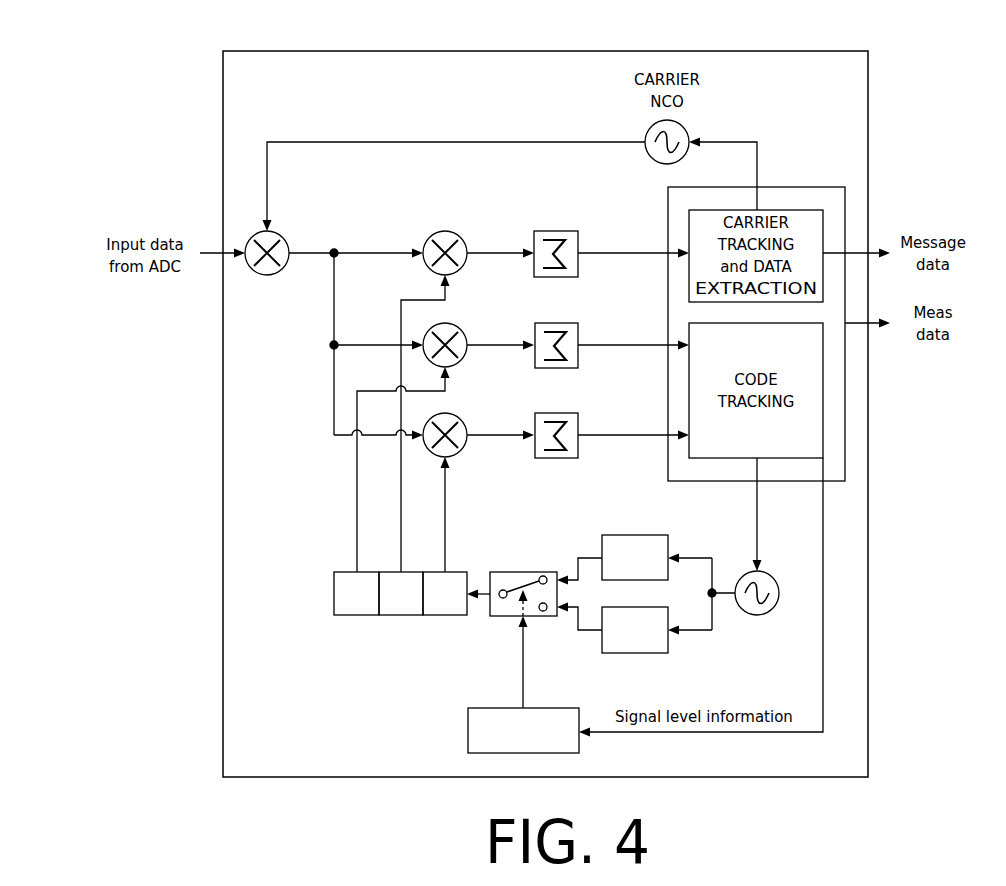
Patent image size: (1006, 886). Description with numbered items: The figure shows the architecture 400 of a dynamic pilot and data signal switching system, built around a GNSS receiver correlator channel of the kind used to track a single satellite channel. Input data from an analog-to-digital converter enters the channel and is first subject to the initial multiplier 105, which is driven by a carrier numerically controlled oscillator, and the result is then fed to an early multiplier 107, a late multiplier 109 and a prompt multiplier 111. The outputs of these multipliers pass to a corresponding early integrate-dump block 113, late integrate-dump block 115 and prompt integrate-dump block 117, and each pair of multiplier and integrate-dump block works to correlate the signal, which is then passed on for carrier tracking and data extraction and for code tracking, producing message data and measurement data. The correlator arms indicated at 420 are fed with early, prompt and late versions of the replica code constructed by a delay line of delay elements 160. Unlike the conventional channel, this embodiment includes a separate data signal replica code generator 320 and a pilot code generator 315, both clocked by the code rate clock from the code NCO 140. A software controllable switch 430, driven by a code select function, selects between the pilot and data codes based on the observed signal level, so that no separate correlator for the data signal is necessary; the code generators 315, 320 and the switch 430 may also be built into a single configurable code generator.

The architecture 400 is at (118, 148).
The initial multiplier 105 is at (258, 238).
The correlator 420 is at (482, 97).
The prompt multiplier 111 is at (451, 230).
The late multiplier 109 is at (433, 330).
The early multiplier 107 is at (437, 416).
The prompt integrate-dump block 117 is at (562, 231).
The late integrate-dump block 115 is at (537, 320).
The early integrate-dump block 113 is at (575, 460).
The delay elements 160 is at (435, 615).
The software controllable switch 430 is at (500, 617).
The pilot code generator 315 is at (668, 538).
The data signal replica code generator 320 is at (663, 655).
The code NCO 140 is at (767, 585).